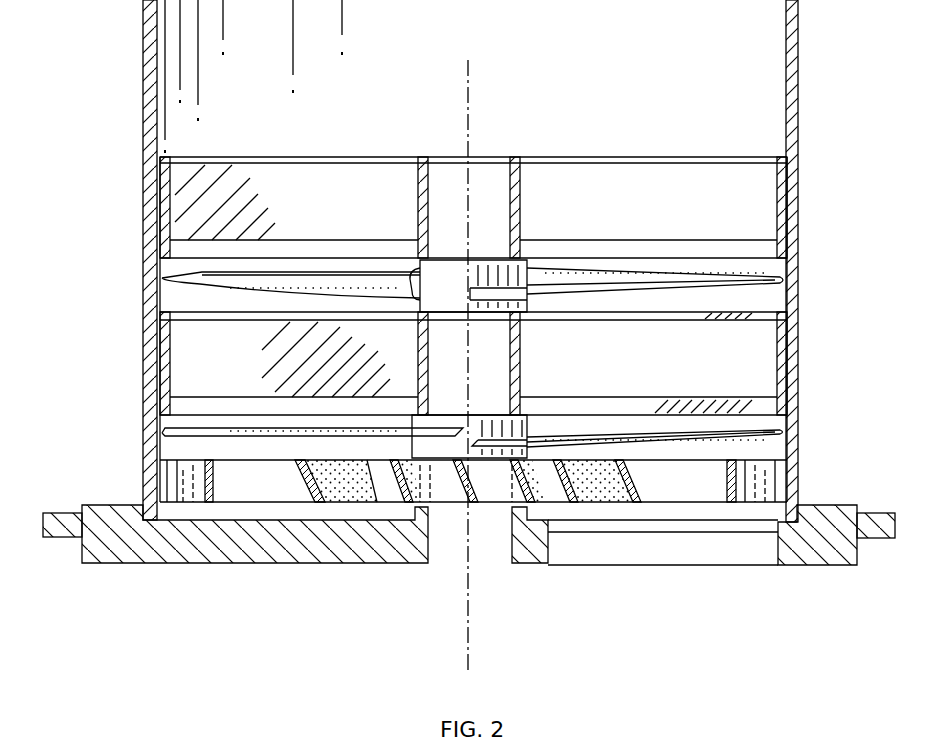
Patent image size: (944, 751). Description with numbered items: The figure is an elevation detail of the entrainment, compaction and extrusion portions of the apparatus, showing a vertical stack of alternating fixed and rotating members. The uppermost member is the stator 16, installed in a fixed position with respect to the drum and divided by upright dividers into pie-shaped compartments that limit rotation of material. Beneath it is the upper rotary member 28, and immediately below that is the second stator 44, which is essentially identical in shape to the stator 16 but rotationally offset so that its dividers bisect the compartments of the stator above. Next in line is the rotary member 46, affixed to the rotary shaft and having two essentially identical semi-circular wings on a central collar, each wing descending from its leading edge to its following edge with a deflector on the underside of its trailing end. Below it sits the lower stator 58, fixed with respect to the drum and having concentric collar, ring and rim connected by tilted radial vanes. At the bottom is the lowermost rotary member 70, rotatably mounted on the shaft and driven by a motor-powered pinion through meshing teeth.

The stator 16 is at (665, 160).
The upper rotary member 28 is at (667, 293).
The second stator 44 is at (235, 377).
The rotary member 46 is at (212, 437).
The lower stator 58 is at (632, 466).
The lowermost rotary member 70 is at (174, 565).